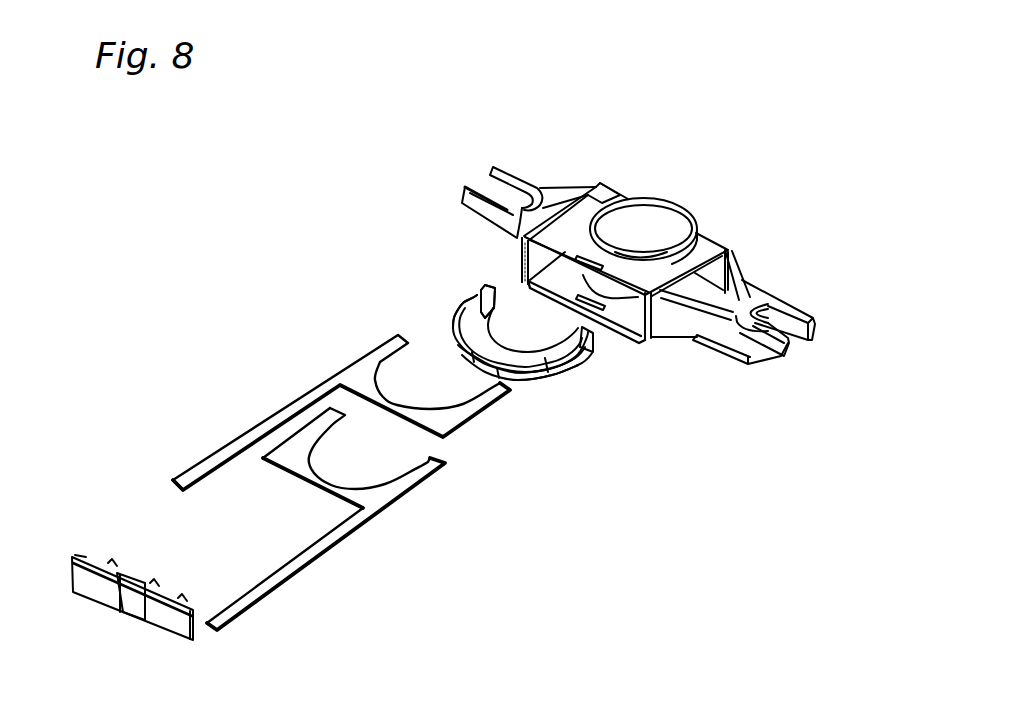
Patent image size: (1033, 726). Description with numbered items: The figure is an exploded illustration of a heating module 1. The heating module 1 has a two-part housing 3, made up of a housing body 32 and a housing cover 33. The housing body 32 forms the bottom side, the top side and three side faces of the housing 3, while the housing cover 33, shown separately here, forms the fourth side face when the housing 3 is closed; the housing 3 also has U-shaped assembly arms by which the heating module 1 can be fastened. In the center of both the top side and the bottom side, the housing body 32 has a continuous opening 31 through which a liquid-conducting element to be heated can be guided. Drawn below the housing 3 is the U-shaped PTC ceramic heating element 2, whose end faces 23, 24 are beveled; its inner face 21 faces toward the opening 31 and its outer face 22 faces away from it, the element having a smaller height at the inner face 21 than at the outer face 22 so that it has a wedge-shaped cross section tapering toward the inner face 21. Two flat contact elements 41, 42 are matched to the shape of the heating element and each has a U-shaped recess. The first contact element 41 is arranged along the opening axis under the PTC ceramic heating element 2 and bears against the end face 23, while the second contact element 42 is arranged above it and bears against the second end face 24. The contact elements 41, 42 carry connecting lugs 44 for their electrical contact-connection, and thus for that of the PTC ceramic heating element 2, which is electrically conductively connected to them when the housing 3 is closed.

The heating module 1 is at (482, 100).
The PTC ceramic heating element 2 is at (587, 357).
The inner face 21 is at (485, 288).
The outer face 22 is at (543, 372).
The end face 23 is at (465, 307).
The end face 24 is at (537, 378).
The housing 3 is at (287, 252).
The opening 31 is at (638, 252).
The housing body 32 is at (523, 253).
The housing cover 33 is at (87, 575).
The first contact element 41 is at (393, 497).
The second contact element 42 is at (362, 372).
The connecting lugs 44 is at (195, 473).